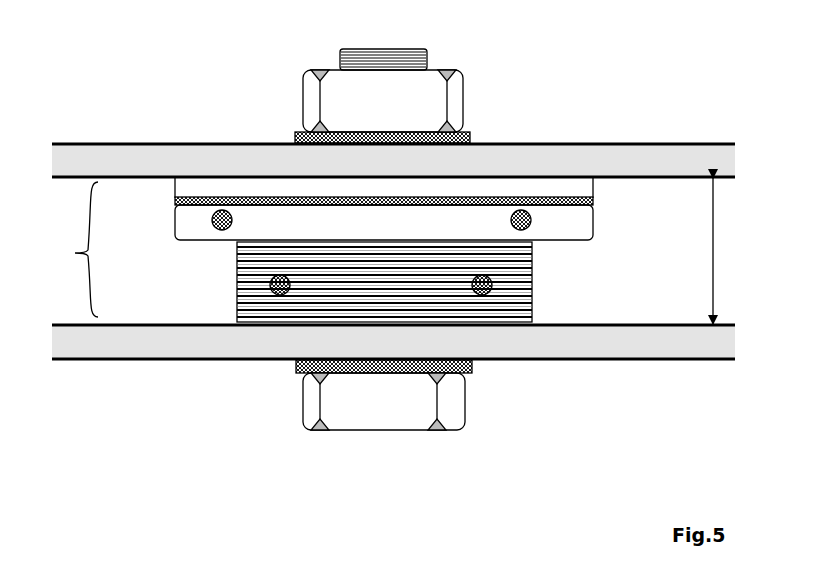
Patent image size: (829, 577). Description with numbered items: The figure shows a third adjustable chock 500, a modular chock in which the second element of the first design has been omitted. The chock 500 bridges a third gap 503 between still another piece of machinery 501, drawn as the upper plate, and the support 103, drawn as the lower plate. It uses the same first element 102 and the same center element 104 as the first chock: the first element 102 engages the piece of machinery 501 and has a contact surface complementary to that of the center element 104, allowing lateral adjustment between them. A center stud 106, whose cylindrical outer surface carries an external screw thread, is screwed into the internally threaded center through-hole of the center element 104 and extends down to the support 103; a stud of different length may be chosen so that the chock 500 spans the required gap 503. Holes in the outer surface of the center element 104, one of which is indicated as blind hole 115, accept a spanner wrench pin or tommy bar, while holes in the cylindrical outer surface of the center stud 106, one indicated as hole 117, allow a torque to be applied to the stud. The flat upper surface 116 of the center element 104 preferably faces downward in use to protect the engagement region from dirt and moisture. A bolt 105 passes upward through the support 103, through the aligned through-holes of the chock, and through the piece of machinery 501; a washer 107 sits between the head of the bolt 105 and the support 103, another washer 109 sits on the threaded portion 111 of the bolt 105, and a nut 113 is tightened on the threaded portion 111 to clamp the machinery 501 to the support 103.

The third adjustable chock 500 is at (68, 266).
The piece of machinery 501 is at (571, 150).
The third gap 503 is at (716, 285).
The first element 102 is at (185, 187).
The support 103 is at (603, 350).
The center element 104 is at (185, 225).
The bolt 105 is at (363, 413).
The center stud 106 is at (262, 313).
The washer 107 is at (296, 368).
The washer 109 is at (297, 133).
The threaded portion 111 is at (362, 57).
The nut 113 is at (456, 107).
The blind hole 115 is at (532, 218).
The flat upper surface 116 is at (566, 244).
The hole 117 is at (492, 287).